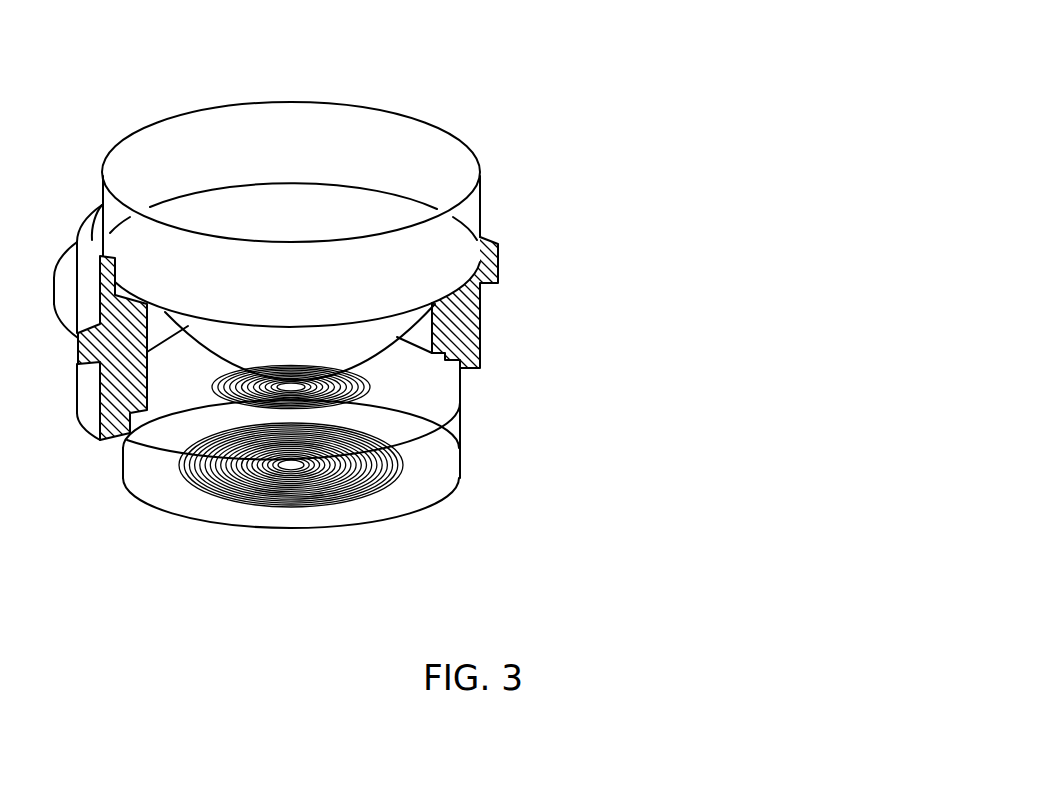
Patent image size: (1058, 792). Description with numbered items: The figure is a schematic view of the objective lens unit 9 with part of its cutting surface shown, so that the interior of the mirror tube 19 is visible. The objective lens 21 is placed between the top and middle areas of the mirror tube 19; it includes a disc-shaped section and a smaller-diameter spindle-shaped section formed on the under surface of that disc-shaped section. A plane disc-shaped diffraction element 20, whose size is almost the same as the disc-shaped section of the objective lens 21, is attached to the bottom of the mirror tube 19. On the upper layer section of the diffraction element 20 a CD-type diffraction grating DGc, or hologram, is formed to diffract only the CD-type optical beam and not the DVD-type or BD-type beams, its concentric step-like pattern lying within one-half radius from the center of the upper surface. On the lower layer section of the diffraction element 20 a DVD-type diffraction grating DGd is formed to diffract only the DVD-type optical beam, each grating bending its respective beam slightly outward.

The objective lens unit 9 is at (342, 52).
The objective lens 21 is at (436, 130).
The mirror tube 19 is at (482, 320).
The CD-type diffraction grating DGc is at (377, 388).
The diffraction element 20 is at (455, 430).
The DVD-type diffraction grating DGd is at (402, 465).